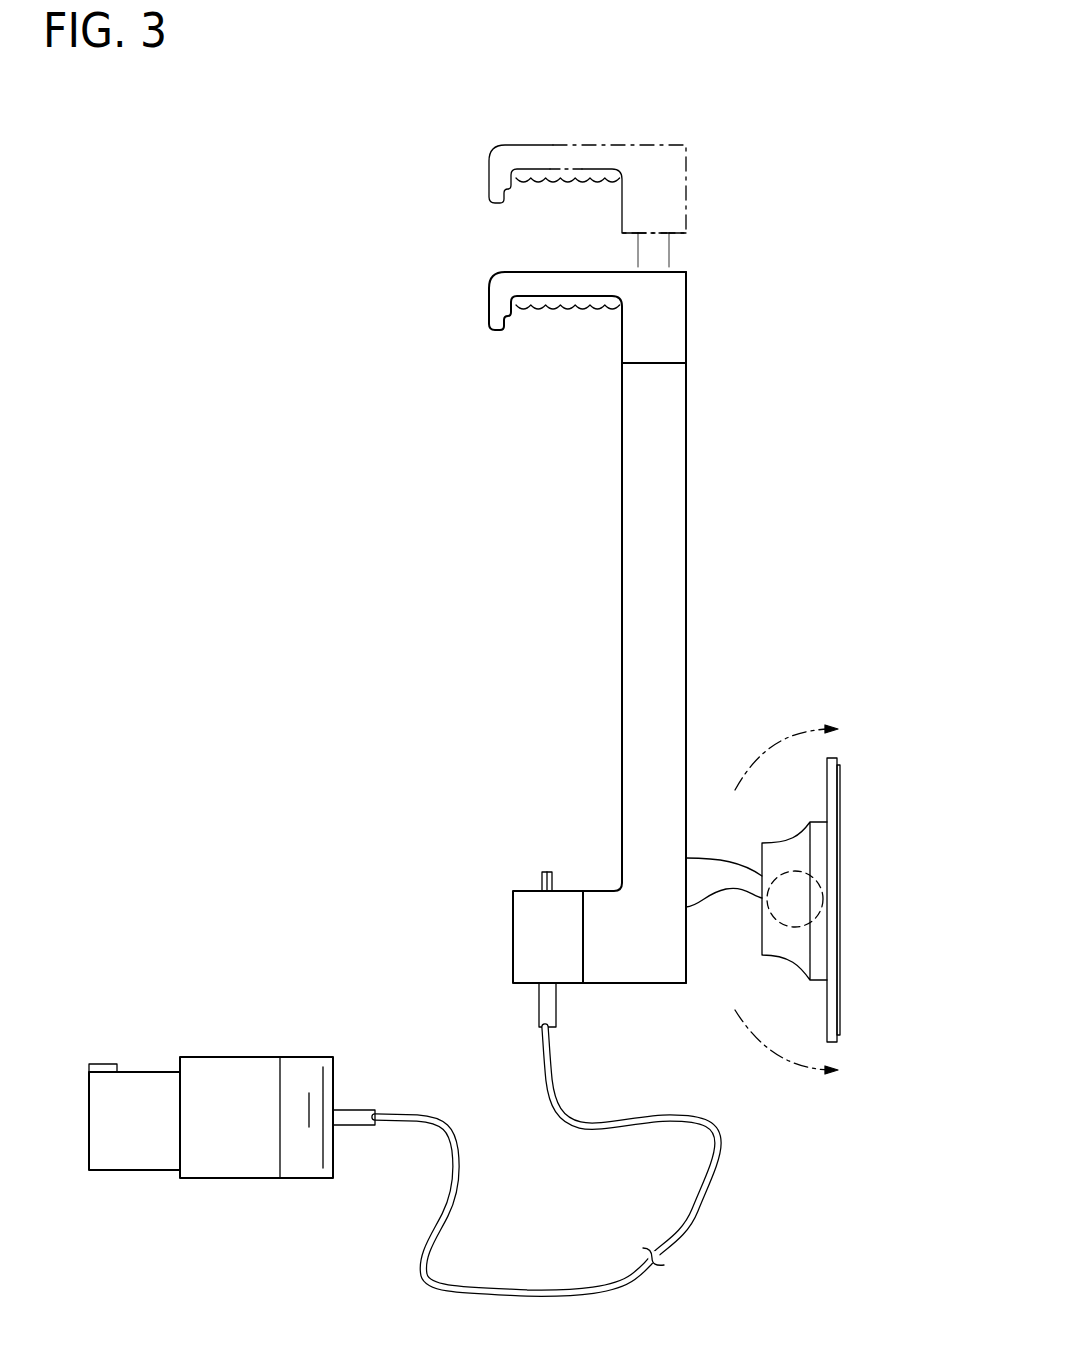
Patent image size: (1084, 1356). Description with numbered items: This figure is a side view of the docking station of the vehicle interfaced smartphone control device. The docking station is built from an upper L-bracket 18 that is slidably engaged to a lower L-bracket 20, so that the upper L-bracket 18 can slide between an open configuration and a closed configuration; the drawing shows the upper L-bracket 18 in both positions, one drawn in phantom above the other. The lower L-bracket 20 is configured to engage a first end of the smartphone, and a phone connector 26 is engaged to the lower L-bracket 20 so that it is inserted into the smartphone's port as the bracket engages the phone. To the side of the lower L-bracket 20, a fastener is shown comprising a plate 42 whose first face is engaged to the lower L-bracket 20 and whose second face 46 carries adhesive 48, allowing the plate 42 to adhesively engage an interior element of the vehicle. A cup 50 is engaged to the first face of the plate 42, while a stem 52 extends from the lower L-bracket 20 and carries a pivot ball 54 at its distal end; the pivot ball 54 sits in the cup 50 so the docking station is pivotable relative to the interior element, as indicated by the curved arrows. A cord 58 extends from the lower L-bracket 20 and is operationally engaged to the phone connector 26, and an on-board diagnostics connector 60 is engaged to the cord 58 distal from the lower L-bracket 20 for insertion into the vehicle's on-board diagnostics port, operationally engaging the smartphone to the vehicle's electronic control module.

The upper L-bracket 18 is at (669, 309).
The lower L-bracket 20 is at (660, 428).
The phone connector 26 is at (540, 866).
The plate 42 is at (847, 869).
The second face 46 is at (854, 828).
The adhesive 48 is at (854, 869).
The cup 50 is at (801, 947).
The stem 52 is at (713, 908).
The pivot ball 54 is at (801, 900).
The cord 58 is at (723, 1188).
The on-board diagnostics connector 60 is at (214, 1047).